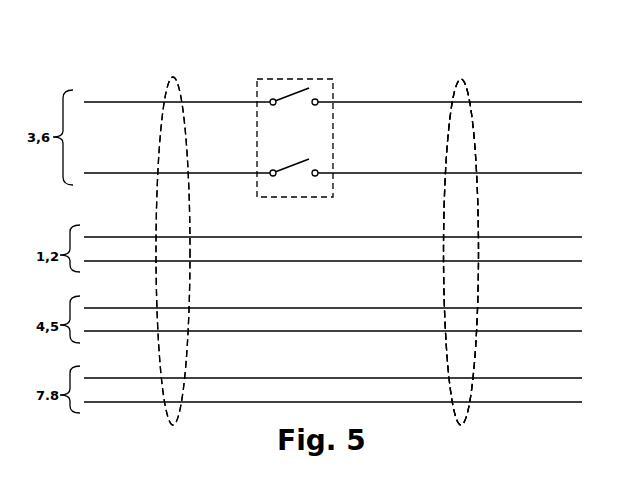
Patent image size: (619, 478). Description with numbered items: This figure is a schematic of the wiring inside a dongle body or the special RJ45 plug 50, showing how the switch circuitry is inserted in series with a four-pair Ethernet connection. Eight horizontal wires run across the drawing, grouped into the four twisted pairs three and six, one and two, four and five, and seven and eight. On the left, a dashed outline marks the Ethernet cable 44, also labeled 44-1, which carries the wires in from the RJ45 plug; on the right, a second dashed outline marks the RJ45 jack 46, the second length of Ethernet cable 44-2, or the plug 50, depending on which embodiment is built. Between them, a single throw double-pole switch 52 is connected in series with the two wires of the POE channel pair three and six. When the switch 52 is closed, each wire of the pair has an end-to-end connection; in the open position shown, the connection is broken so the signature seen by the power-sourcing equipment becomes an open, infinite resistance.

The Ethernet cable 44 is at (172, 78).
The first cable end 44-1 is at (152, 245).
The single throw double-pole switch 52 is at (295, 79).
The RJ45 jack 46 is at (462, 80).
The second length of Ethernet cable 44-2 is at (492, 240).
The RJ45 plug 50 is at (482, 249).